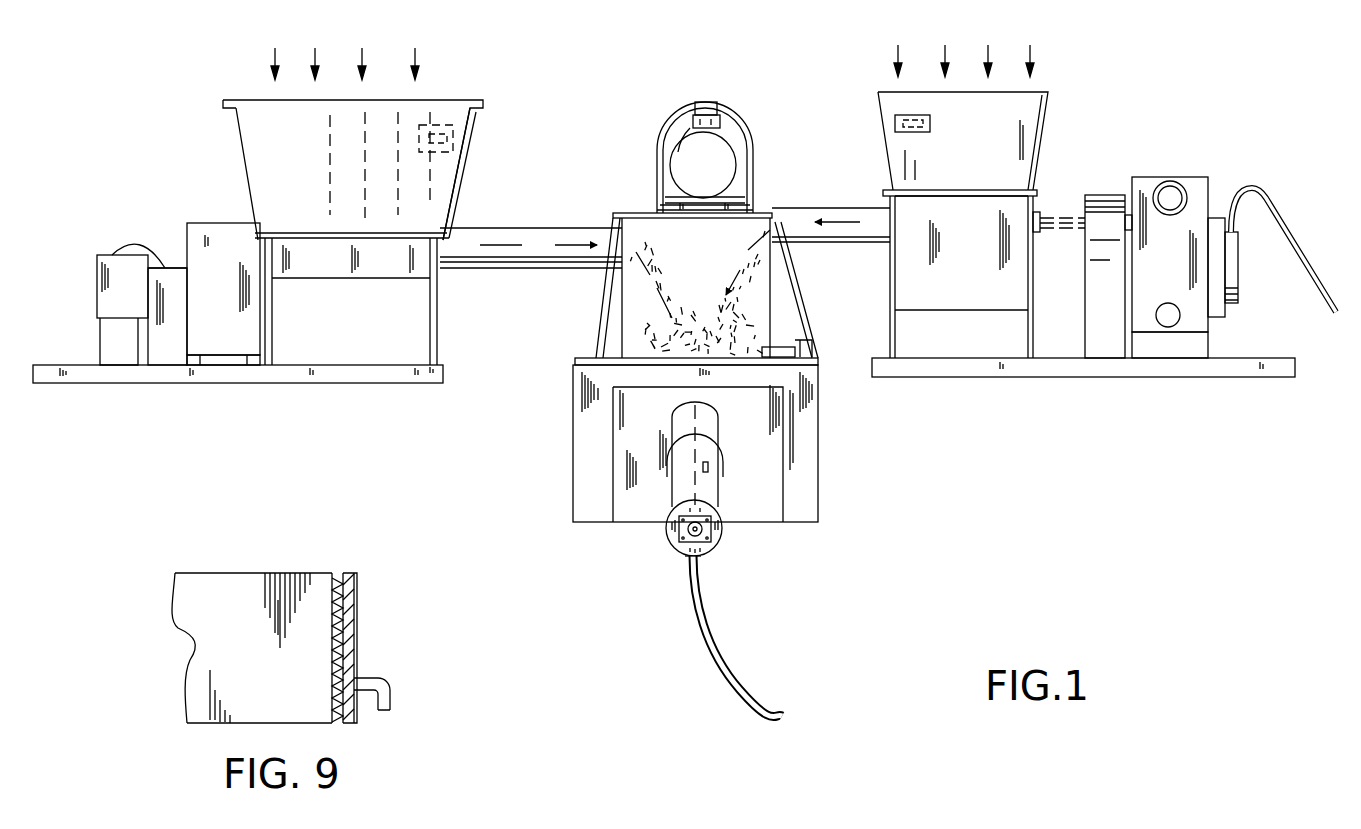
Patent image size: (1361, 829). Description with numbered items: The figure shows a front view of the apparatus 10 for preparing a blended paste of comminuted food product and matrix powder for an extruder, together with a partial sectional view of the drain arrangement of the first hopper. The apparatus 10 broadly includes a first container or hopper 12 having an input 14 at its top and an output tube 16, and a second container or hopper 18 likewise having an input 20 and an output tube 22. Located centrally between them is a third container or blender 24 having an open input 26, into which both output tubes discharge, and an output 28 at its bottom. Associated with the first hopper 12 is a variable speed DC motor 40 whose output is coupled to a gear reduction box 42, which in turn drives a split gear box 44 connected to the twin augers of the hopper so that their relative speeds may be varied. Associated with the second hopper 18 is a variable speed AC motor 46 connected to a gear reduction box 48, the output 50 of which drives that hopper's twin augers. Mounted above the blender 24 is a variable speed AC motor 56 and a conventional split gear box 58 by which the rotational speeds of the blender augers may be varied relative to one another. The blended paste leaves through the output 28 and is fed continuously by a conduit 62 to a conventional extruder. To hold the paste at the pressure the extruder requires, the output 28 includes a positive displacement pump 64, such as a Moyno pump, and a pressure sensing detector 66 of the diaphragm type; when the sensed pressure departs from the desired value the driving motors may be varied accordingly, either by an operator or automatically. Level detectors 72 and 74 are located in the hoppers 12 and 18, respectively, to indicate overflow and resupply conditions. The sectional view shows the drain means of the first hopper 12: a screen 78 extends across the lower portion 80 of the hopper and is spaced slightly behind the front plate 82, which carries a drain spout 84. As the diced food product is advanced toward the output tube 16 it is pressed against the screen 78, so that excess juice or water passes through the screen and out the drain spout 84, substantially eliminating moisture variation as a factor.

In FIG. 1, the apparatus 10 is at (346, 436).
In FIG. 1, the first container or hopper 12 is at (248, 96).
In FIG. 1, the input 14 is at (430, 97).
In FIG. 1, the output tube 16 is at (553, 265).
In FIG. 1, the second container or hopper 18 is at (1052, 122).
In FIG. 1, the input 20 is at (1033, 92).
In FIG. 1, the output tube 22 is at (856, 243).
In FIG. 1, the third container or blender 24 is at (556, 425).
In FIG. 1, the open input 26 is at (628, 340).
In FIG. 1, the output 28 is at (719, 505).
In FIG. 1, the variable speed DC motor 40 is at (118, 255).
In FIG. 1, the gear reduction box 42 is at (170, 377).
In FIG. 1, the split gear box 44 is at (232, 350).
In FIG. 1, the variable speed AC motor 46 is at (1182, 178).
In FIG. 1, the gear reduction box 48 is at (1110, 345).
In FIG. 1, the output 50 is at (1050, 215).
In FIG. 1, the variable speed AC motor 56 is at (732, 145).
In FIG. 1, the split gear box 58 is at (665, 210).
In FIG. 1, the conduit 62 is at (720, 628).
In FIG. 1, the positive displacement pump 64 is at (672, 432).
In FIG. 1, the pressure sensing detector 66 is at (706, 462).
In FIG. 1, the level detector 72 is at (455, 138).
In FIG. 1, the level detector 74 is at (903, 133).
In FIG. 9, the screen 78 is at (336, 586).
In FIG. 9, the lower portion 80 is at (195, 700).
In FIG. 9, the front plate 82 is at (357, 580).
In FIG. 9, the drain spout 84 is at (387, 698).